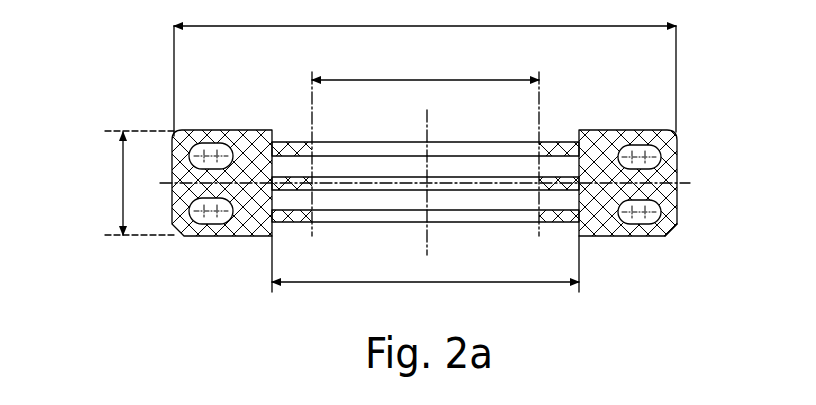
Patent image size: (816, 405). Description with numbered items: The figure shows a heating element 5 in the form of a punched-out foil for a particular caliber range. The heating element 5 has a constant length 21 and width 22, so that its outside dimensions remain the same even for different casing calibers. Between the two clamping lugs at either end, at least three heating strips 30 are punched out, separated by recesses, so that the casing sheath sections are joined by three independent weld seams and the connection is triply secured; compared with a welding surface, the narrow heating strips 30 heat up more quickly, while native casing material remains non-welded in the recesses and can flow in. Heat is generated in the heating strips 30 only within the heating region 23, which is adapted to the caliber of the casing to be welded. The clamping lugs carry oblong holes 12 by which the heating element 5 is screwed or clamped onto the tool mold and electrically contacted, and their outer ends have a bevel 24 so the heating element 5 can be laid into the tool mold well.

The heating element 5 is at (188, 228).
The oblong hole 12 is at (672, 138).
The length 21 is at (500, 285).
The width 22 is at (118, 182).
The heating region 23 is at (398, 80).
The bevel 24 is at (672, 232).
The heating strip 30 is at (340, 222).